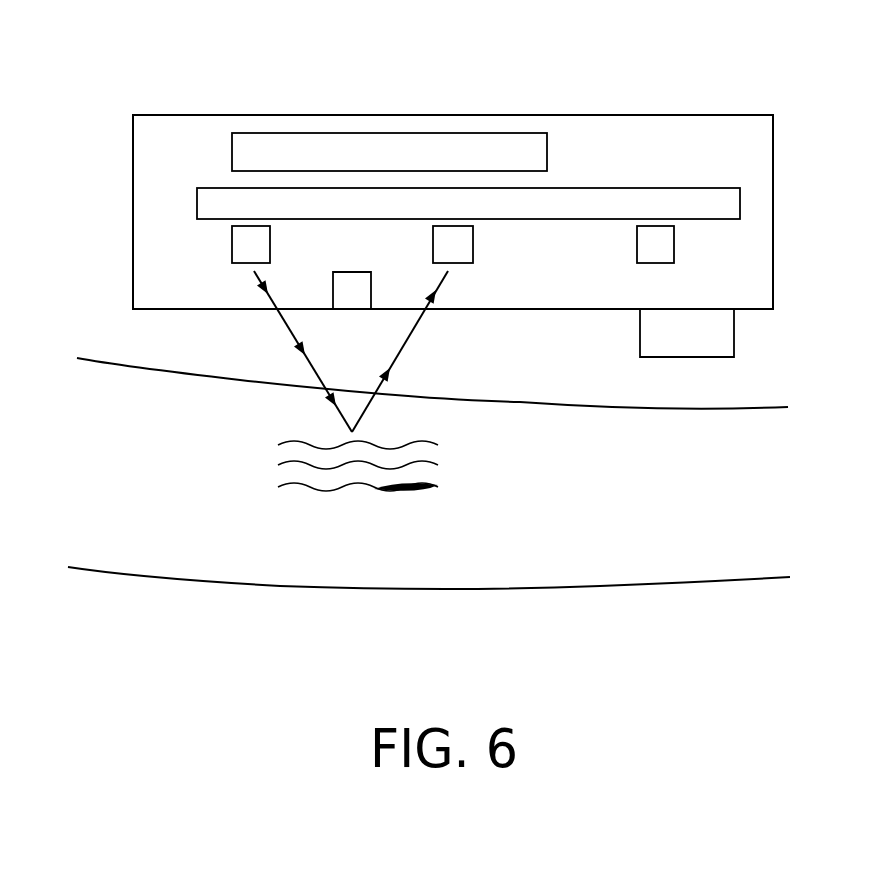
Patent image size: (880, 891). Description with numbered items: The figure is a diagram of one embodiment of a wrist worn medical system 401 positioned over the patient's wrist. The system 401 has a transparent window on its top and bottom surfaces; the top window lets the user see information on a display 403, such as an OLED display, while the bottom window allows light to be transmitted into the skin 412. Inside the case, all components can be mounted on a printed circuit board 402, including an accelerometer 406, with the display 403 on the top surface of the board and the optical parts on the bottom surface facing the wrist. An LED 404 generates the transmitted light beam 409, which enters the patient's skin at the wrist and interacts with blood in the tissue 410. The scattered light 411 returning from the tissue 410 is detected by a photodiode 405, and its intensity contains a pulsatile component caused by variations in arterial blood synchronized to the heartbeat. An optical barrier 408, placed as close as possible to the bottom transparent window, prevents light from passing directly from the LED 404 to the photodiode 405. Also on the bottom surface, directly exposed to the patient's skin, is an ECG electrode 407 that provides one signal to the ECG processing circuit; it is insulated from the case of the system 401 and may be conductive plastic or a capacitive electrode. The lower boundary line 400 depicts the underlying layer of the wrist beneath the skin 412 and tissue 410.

The tissue/skin layer 400 is at (121, 595).
The wrist worn medical system 401 is at (612, 77).
The printed circuit board 402 is at (205, 203).
The display 403 is at (532, 148).
The LED 404 is at (240, 245).
The photodiode 405 is at (463, 245).
The accelerometer 406 is at (667, 245).
The ECG electrode 407 is at (648, 338).
The optical barrier 408 is at (348, 278).
The transmitted light beam 409 is at (290, 338).
The tissue 410 is at (258, 481).
The scattered light 411 is at (407, 343).
The skin 412 is at (117, 362).